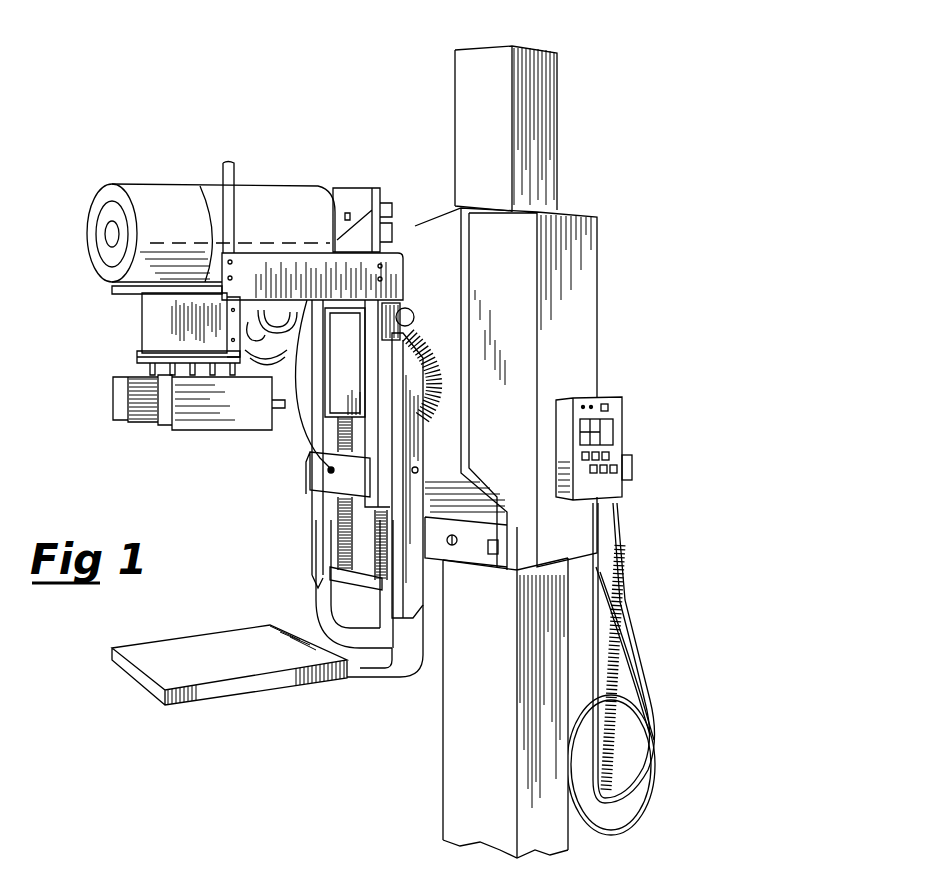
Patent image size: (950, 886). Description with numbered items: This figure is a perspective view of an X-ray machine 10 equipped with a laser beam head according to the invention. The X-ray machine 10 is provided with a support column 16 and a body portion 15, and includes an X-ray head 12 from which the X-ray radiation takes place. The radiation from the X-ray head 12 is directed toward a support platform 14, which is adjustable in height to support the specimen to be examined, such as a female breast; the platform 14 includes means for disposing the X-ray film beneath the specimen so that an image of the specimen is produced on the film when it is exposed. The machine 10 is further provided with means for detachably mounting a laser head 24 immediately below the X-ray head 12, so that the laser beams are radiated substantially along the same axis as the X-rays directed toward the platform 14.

The X-ray machine 10 is at (598, 76).
The X-ray head 12 is at (84, 213).
The support platform 14 is at (281, 699).
The body portion 15 is at (597, 310).
The support column 16 is at (455, 108).
The laser head 24 is at (113, 392).